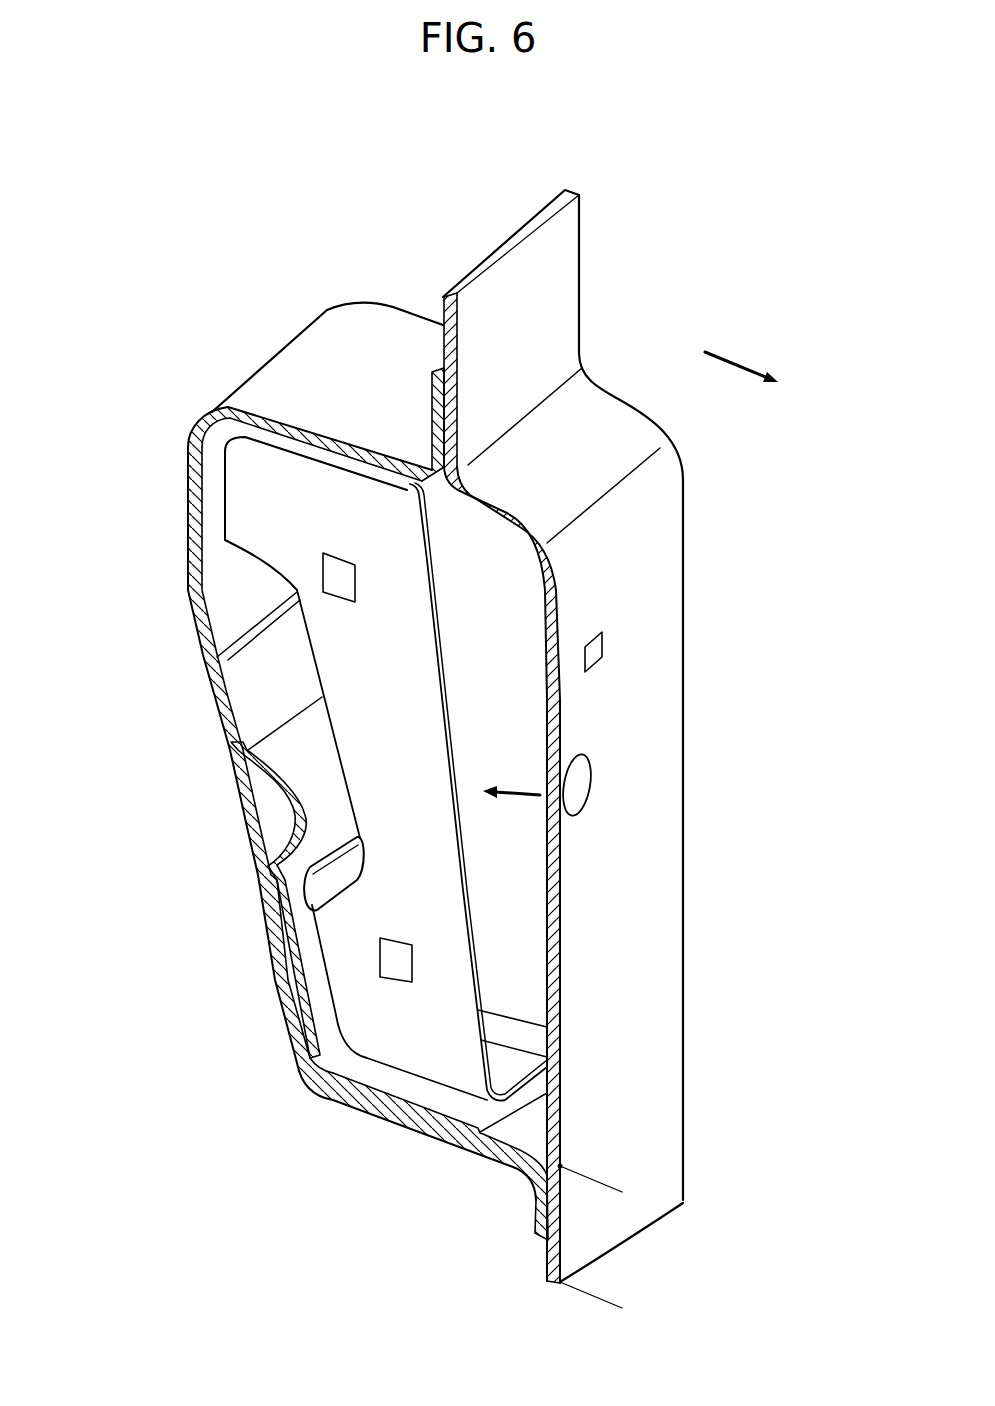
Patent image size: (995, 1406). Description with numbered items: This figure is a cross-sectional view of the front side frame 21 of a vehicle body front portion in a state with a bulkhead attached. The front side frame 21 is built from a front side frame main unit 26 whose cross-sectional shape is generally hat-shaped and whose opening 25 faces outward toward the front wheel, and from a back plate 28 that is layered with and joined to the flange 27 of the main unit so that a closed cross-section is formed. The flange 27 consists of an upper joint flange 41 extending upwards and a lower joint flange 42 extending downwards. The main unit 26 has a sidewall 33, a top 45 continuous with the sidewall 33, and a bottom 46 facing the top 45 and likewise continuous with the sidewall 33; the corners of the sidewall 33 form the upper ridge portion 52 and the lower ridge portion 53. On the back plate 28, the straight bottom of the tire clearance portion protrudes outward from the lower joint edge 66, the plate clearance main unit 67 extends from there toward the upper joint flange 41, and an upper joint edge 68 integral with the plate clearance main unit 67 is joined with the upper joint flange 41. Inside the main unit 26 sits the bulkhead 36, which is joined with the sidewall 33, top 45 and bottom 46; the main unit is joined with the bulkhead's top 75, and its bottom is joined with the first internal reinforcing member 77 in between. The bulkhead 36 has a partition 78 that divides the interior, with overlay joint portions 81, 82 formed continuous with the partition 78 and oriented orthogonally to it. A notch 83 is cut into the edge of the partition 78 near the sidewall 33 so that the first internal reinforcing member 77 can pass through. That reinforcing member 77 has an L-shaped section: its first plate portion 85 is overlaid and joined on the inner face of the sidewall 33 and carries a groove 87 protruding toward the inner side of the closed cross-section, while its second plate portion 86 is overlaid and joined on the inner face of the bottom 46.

The front side frame 21 is at (455, 119).
The opening 25 is at (470, 650).
The front side frame main unit 26 is at (393, 300).
The flange 27 is at (530, 1215).
The back plate 28 is at (615, 407).
The sidewall 33 is at (235, 793).
The bulkhead 36 is at (493, 735).
The upper joint flange 41 is at (430, 403).
The lower joint flange 42 is at (514, 1259).
The top 45 is at (325, 395).
The bottom 46 is at (400, 1122).
The upper ridge portion 52 is at (288, 340).
The lower ridge portion 53 is at (300, 1078).
The lower joint edge 66 is at (622, 1192).
The plate clearance main unit 67 is at (647, 867).
The upper joint edge 68 is at (578, 265).
The top 75 is at (300, 510).
The first internal reinforcing member 77 is at (237, 630).
The partition 78 is at (403, 815).
The overlay joint portion 81 is at (433, 485).
The overlay joint portion 82 is at (502, 1063).
The notch 83 is at (333, 747).
The first plate portion 85 is at (290, 880).
The second plate portion 86 is at (390, 1082).
The groove 87 is at (293, 825).